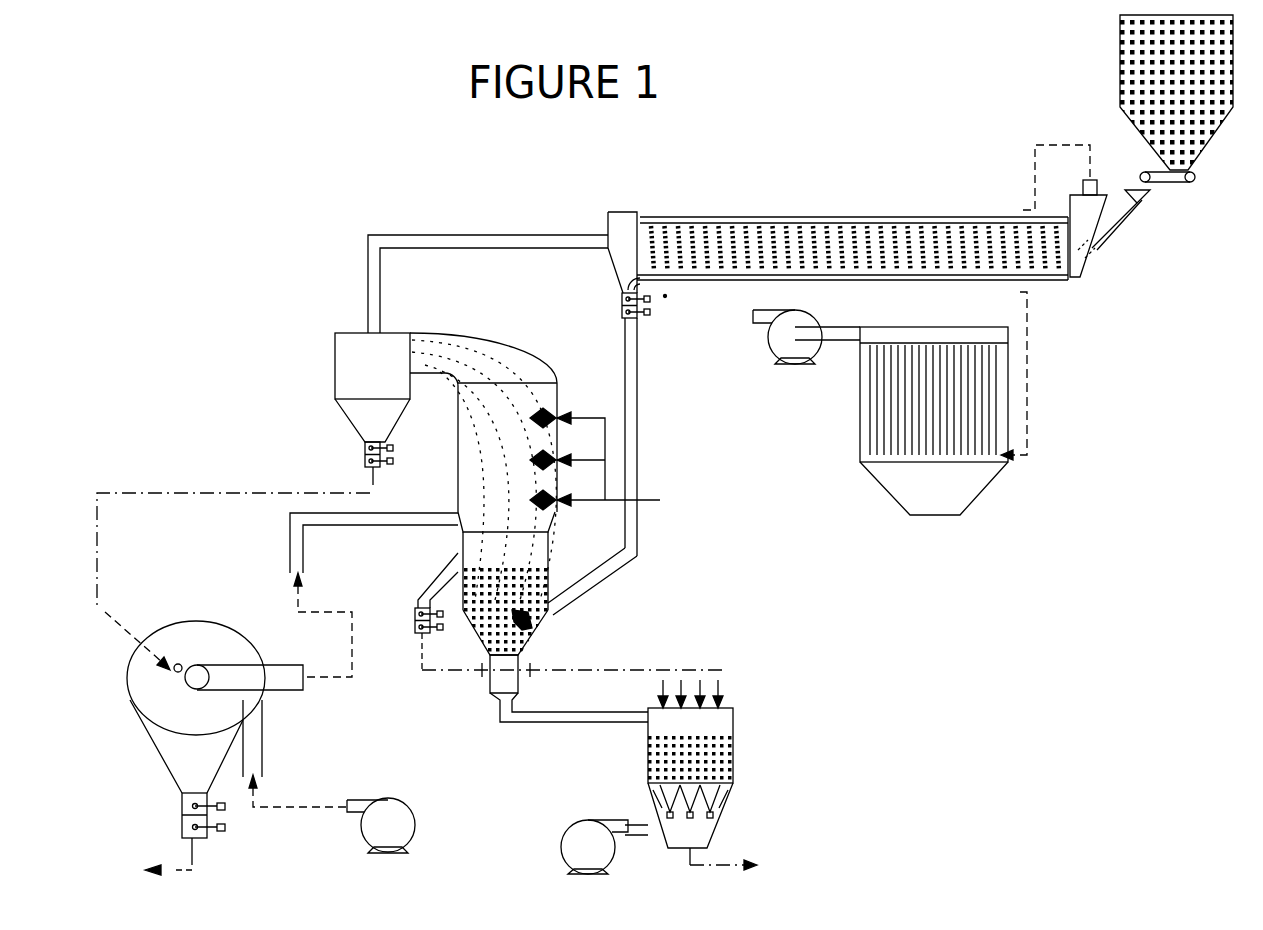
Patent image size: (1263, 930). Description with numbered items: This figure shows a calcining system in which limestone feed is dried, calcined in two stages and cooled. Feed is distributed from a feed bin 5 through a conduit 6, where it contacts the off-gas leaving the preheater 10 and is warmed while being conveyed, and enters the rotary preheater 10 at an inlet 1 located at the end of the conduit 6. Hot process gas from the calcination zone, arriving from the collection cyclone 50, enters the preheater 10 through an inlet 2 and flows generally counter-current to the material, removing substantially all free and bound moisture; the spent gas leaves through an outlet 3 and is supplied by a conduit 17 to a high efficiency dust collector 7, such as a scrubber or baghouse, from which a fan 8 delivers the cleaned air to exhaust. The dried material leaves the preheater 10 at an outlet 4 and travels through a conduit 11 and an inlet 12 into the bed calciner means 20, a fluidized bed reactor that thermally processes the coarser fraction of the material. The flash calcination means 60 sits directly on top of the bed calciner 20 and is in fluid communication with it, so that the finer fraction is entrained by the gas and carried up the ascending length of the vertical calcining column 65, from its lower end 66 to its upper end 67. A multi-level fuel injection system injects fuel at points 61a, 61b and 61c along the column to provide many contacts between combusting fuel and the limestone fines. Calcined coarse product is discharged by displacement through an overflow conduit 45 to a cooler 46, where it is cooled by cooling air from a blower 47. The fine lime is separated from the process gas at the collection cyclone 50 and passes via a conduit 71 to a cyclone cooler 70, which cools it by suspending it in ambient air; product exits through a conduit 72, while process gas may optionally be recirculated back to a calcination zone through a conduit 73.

The inlet 1 is at (1095, 250).
The inlet 2 is at (608, 250).
The outlet 3 is at (1097, 183).
The outlet 4 is at (663, 300).
The feed bin 5 is at (1120, 78).
The conduit 6 is at (1140, 205).
The dust collector 7 is at (860, 425).
The fan 8 is at (780, 340).
The preheater 10 is at (882, 218).
The conduit 11 is at (667, 437).
The inlet 12 is at (548, 612).
The conduit 17 is at (1030, 370).
The bed calciner means 20 is at (546, 565).
The overflow conduit 45 is at (445, 565).
The cooler 46 is at (735, 748).
The blower 47 is at (582, 830).
The collection cyclone 50 is at (335, 362).
The flash calcination means 60 is at (458, 475).
The fuel injection point 61a is at (595, 492).
The fuel injection point 61b is at (571, 451).
The fuel injection point 61c is at (570, 445).
The vertical calcining column 65 is at (457, 410).
The lower end 66 is at (553, 522).
The upper end 67 is at (556, 388).
The cyclone cooler 70 is at (158, 742).
The conduit 71 is at (100, 560).
The conduit 72 is at (192, 848).
The conduit 73 is at (352, 645).